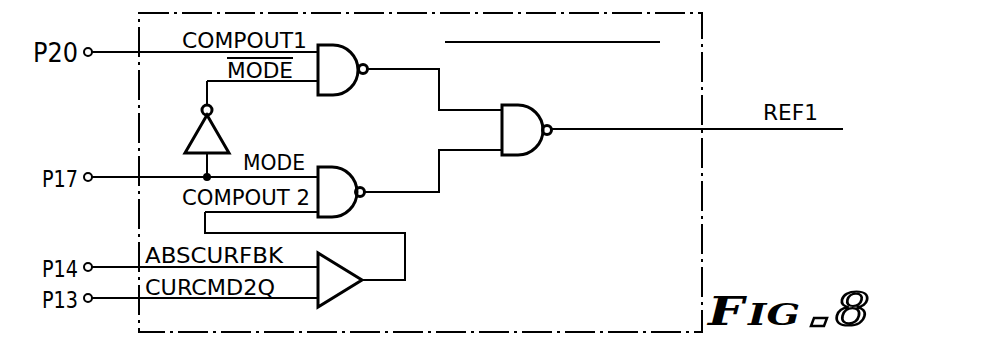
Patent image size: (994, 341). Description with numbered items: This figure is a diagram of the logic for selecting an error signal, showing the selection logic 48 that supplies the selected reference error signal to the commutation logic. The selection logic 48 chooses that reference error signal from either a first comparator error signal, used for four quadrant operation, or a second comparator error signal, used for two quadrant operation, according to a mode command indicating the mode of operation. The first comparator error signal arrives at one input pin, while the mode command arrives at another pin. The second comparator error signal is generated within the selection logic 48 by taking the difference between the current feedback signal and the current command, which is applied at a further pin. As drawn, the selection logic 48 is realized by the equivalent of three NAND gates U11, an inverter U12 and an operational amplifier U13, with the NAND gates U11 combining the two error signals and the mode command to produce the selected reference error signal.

The selection logic 48 is at (712, 68).
The NAND gates U11 is at (524, 124).
The inverter U12 is at (251, 129).
The operational amplifier U13 is at (305, 259).